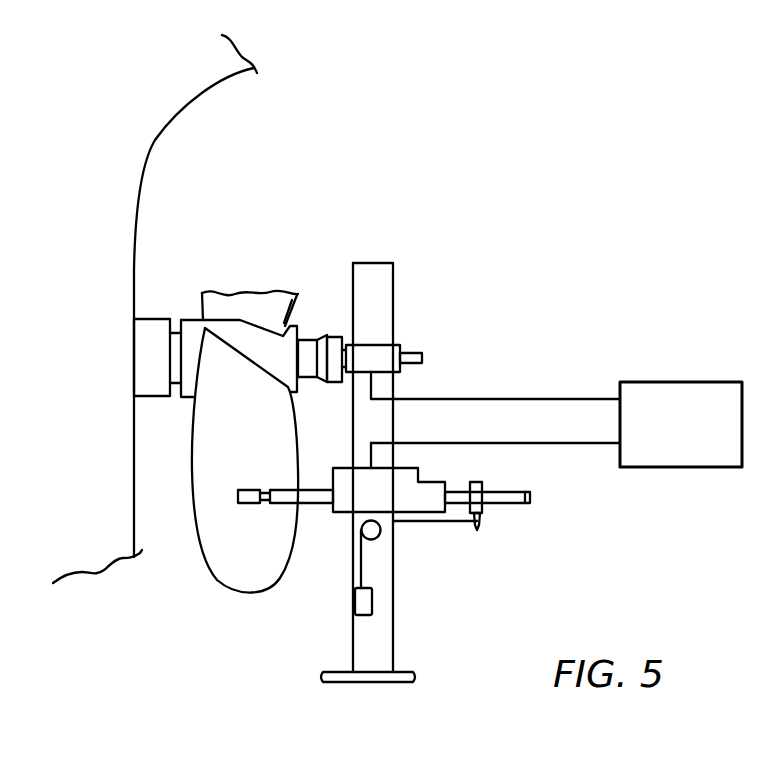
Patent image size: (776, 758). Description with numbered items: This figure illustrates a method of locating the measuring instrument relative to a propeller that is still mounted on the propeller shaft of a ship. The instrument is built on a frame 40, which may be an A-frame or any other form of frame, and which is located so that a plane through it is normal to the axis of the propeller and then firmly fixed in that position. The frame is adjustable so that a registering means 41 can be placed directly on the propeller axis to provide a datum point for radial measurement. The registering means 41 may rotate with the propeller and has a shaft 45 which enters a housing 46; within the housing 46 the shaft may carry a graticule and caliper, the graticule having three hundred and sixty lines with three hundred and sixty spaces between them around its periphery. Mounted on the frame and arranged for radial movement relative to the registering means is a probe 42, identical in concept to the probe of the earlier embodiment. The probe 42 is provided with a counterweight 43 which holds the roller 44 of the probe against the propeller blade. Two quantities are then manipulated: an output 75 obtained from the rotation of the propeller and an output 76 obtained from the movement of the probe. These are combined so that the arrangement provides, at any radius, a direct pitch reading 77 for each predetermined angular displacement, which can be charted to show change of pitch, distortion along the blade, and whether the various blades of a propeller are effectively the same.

The frame 40 is at (377, 290).
The registering means 41 is at (333, 337).
The probe 42 is at (430, 471).
The counterweight 43 is at (360, 600).
The roller 44 is at (247, 489).
The shaft 45 is at (413, 352).
The housing 46 is at (392, 362).
The output 75 is at (467, 401).
The output 76 is at (542, 445).
The direct pitch reading 77 is at (670, 382).